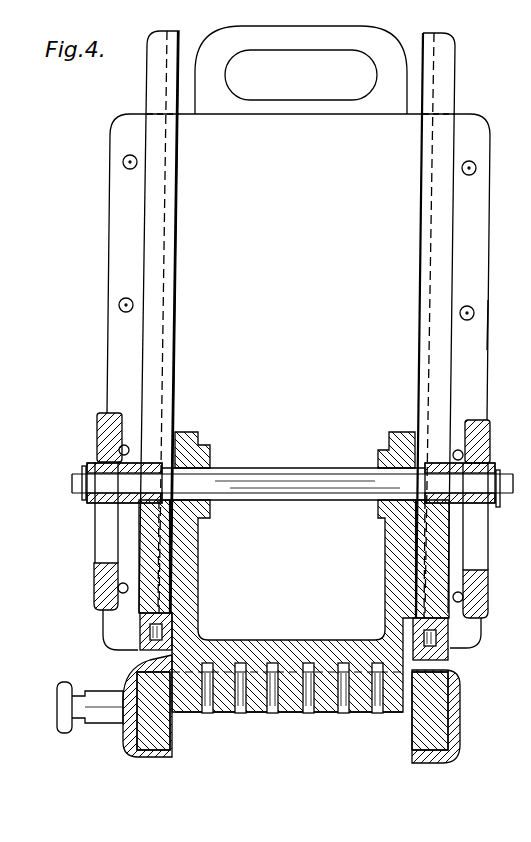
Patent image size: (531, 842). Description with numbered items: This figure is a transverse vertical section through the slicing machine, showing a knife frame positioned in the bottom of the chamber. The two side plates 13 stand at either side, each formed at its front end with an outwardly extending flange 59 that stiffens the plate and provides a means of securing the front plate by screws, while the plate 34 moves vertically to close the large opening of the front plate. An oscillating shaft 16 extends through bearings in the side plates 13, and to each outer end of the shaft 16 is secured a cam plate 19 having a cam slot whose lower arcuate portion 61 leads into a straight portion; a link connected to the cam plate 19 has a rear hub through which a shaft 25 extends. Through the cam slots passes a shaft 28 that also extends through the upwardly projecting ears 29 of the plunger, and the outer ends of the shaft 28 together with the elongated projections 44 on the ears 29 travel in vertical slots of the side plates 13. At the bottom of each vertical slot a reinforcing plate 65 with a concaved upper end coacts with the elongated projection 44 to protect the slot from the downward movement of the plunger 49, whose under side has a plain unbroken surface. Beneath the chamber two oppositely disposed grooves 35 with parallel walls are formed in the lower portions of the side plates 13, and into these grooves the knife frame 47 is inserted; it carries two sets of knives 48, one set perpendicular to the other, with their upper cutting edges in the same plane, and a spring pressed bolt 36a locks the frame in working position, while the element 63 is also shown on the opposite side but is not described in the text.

The side plates 13 is at (181, 41).
The oscillating shaft 16 is at (509, 325).
The cam plate 19 is at (97, 435).
The shaft 25 is at (468, 101).
The shaft or pin 28 is at (158, 468).
The upwardly projecting ears 29 is at (198, 560).
The plate 34 is at (276, 106).
The grooves 35 is at (134, 757).
The spring pressed bolt 36a is at (95, 692).
The elongated projections 44 is at (112, 560).
The knife frame 47 is at (170, 752).
The knives 48 is at (172, 714).
The plunger 49 is at (288, 640).
The outwardly extending flanges 59 is at (111, 238).
The lower arcuate portion 61 is at (100, 542).
The right bolt 63 is at (450, 656).
The reinforcing plate 65 is at (138, 652).